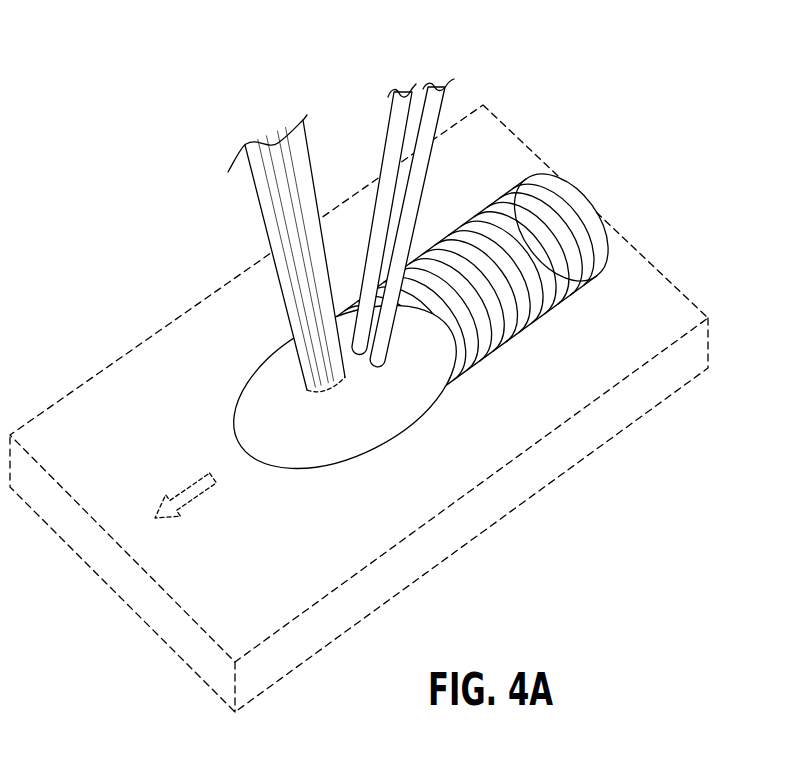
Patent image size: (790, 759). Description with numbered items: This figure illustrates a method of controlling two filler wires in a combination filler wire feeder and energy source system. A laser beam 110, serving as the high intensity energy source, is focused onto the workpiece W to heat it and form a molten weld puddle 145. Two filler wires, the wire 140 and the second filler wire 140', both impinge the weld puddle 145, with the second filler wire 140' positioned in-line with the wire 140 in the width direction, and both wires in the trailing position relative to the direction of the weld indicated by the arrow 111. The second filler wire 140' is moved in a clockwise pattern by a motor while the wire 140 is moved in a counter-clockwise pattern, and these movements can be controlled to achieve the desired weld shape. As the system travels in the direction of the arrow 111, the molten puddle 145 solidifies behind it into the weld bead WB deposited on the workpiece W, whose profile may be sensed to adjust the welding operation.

The workpiece W is at (653, 310).
The weld bead WB is at (567, 217).
The weld puddle 145 is at (277, 400).
The laser beam 110 is at (308, 187).
The filler wire 140 is at (457, 215).
The second filler wire 140' is at (384, 187).
The direction of the weld arrow 111 is at (202, 495).